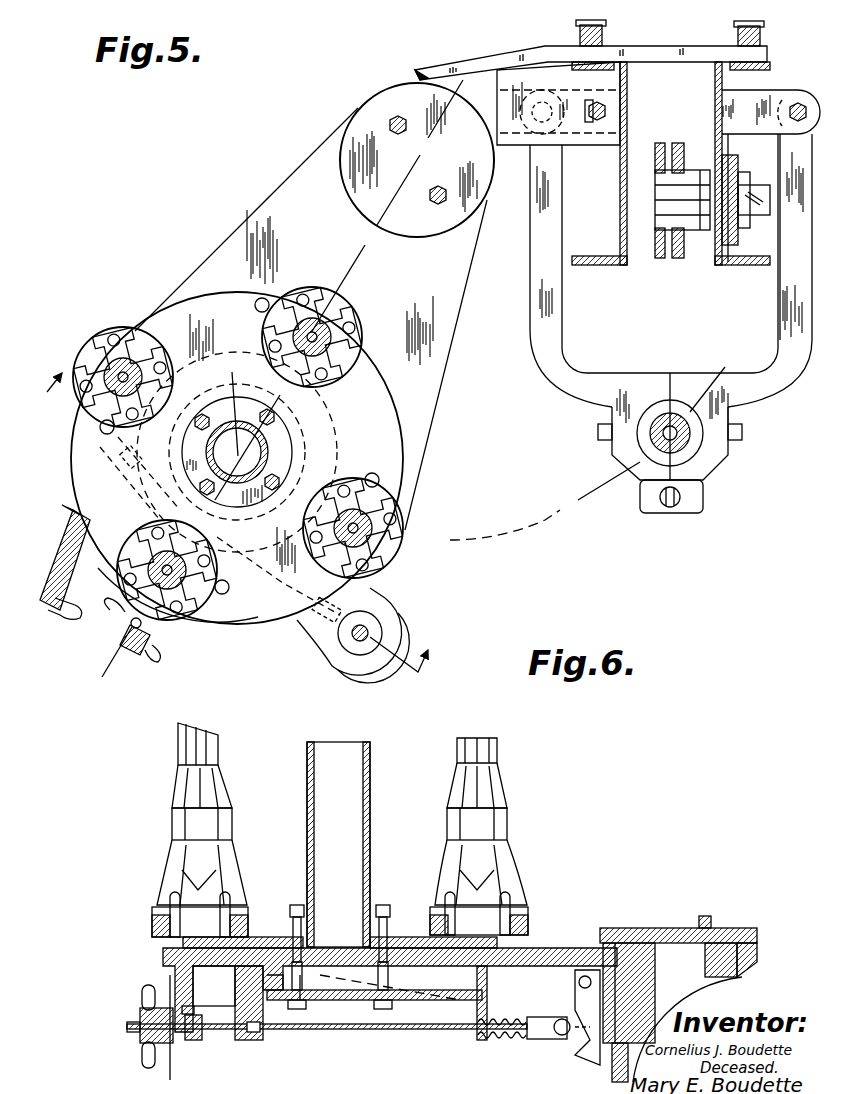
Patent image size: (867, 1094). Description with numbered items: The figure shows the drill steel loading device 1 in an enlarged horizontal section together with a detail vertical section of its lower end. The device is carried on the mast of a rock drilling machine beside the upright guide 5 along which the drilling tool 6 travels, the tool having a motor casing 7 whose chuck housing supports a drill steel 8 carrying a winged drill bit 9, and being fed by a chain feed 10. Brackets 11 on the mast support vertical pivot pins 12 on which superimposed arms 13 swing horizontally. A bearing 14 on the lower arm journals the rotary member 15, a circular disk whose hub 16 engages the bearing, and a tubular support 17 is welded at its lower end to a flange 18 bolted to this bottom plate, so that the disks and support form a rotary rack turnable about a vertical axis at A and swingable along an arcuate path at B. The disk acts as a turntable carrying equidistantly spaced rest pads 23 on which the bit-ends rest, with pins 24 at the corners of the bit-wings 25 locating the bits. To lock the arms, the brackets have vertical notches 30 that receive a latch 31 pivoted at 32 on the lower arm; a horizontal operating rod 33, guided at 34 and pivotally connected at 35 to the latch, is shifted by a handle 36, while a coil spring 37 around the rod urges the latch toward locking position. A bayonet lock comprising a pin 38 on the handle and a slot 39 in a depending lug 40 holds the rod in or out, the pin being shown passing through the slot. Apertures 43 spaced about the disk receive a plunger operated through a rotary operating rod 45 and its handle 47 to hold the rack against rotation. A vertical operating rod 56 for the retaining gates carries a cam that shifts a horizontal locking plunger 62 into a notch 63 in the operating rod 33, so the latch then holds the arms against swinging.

In FIG. 5, the drill steel loading device 1 is at (266, 628).
In FIG. 6, the drill steel loading device 1 is at (560, 946).
In FIG. 5, the upright guide 5 is at (740, 258).
In FIG. 5, the drilling tool 6 is at (466, 82).
In FIG. 5, the motor casing 7 is at (236, 522).
In FIG. 5, the drill steel 8 is at (685, 445).
In FIG. 6, the drill steel 8 is at (180, 742).
In FIG. 5, the winged drill bit 9 is at (143, 352).
In FIG. 6, the winged drill bit 9 is at (162, 860).
In FIG. 5, the chain feed 10 is at (660, 258).
In FIG. 5, the brackets 11 is at (500, 128).
In FIG. 6, the brackets 11 is at (170, 977).
In FIG. 6, the vertical pivot pins 12 is at (640, 942).
In FIG. 5, the superimposed arms 13 is at (386, 430).
In FIG. 6, the superimposed arms 13 is at (528, 946).
In FIG. 6, the bearing 14 is at (402, 978).
In FIG. 5, the rotary member 15 is at (400, 448).
In FIG. 6, the rotary member 15 is at (262, 935).
In FIG. 6, the hub 16 is at (396, 930).
In FIG. 5, the tubular support 17 is at (268, 440).
In FIG. 6, the tubular support 17 is at (308, 812).
In FIG. 5, the flange 18 is at (270, 452).
In FIG. 6, the flange 18 is at (295, 903).
In FIG. 5, the rest pads 23 is at (116, 328).
In FIG. 6, the rest pads 23 is at (152, 920).
In FIG. 5, the pins 24 is at (163, 364).
In FIG. 6, the pins 24 is at (170, 893).
In FIG. 5, the bit-wings 25 is at (100, 345).
In FIG. 6, the bit-wings 25 is at (215, 872).
In FIG. 6, the notches 30 is at (612, 1076).
In FIG. 6, the latch 31 is at (582, 1055).
In FIG. 6, the latch pivot 32 is at (578, 983).
In FIG. 5, the operating rod 33 is at (270, 402).
In FIG. 6, the operating rod 33 is at (390, 1032).
In FIG. 6, the guide 34 is at (250, 1042).
In FIG. 6, the pivotal connection 35 is at (560, 1030).
In FIG. 5, the handle 36 is at (152, 642).
In FIG. 6, the handle 36 is at (140, 1040).
In FIG. 6, the coil spring 37 is at (510, 1040).
In FIG. 6, the pin 38 is at (192, 1042).
In FIG. 6, the slot 39 is at (194, 1009).
In FIG. 6, the depending lug 40 is at (190, 1000).
In FIG. 5, the apertures 43 is at (100, 428).
In FIG. 5, the rotary operating rod 45 is at (105, 480).
In FIG. 5, the handle 47 is at (52, 605).
In FIG. 5, the vertical operating rod 56 is at (356, 640).
In FIG. 5, the horizontal locking plunger 62 is at (290, 590).
In FIG. 6, the notch 63 is at (262, 1034).
In FIG. 5, the vertical axis A is at (228, 402).
In FIG. 5, the arcuate path B is at (505, 535).